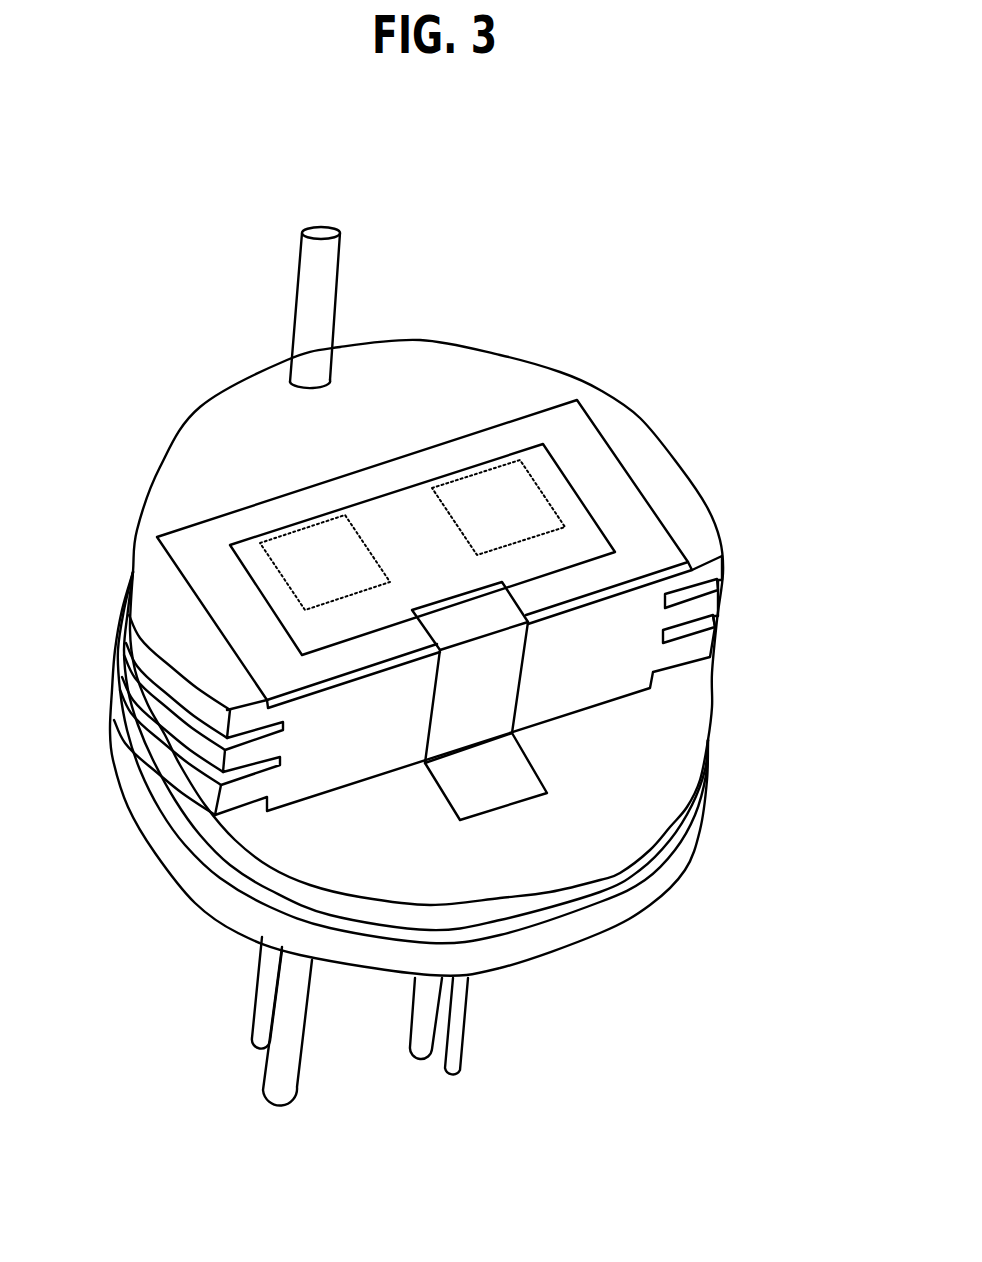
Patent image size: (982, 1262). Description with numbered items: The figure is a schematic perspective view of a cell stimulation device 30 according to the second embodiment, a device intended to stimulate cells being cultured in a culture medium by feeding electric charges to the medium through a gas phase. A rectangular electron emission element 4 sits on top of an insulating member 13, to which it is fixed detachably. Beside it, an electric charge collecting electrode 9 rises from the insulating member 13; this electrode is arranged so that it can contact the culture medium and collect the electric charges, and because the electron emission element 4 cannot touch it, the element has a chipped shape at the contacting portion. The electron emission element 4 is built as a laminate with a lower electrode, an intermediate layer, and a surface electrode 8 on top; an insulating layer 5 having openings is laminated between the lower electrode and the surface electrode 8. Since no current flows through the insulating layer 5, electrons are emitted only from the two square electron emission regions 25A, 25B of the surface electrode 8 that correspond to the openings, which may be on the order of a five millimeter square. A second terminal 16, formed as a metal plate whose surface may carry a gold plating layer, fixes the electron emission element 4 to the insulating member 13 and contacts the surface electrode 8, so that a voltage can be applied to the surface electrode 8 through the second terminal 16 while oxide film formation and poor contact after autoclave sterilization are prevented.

The cell stimulation device 30 is at (676, 347).
The insulating member 13 is at (417, 397).
The electric charge collecting electrode 9 is at (318, 272).
The insulating layer 5 is at (636, 538).
The electron emission element 4 is at (521, 414).
The surface electrode 8 is at (421, 512).
The electron emission region 25A is at (318, 556).
The electron emission region 25B is at (510, 507).
The second terminal 16 is at (487, 692).